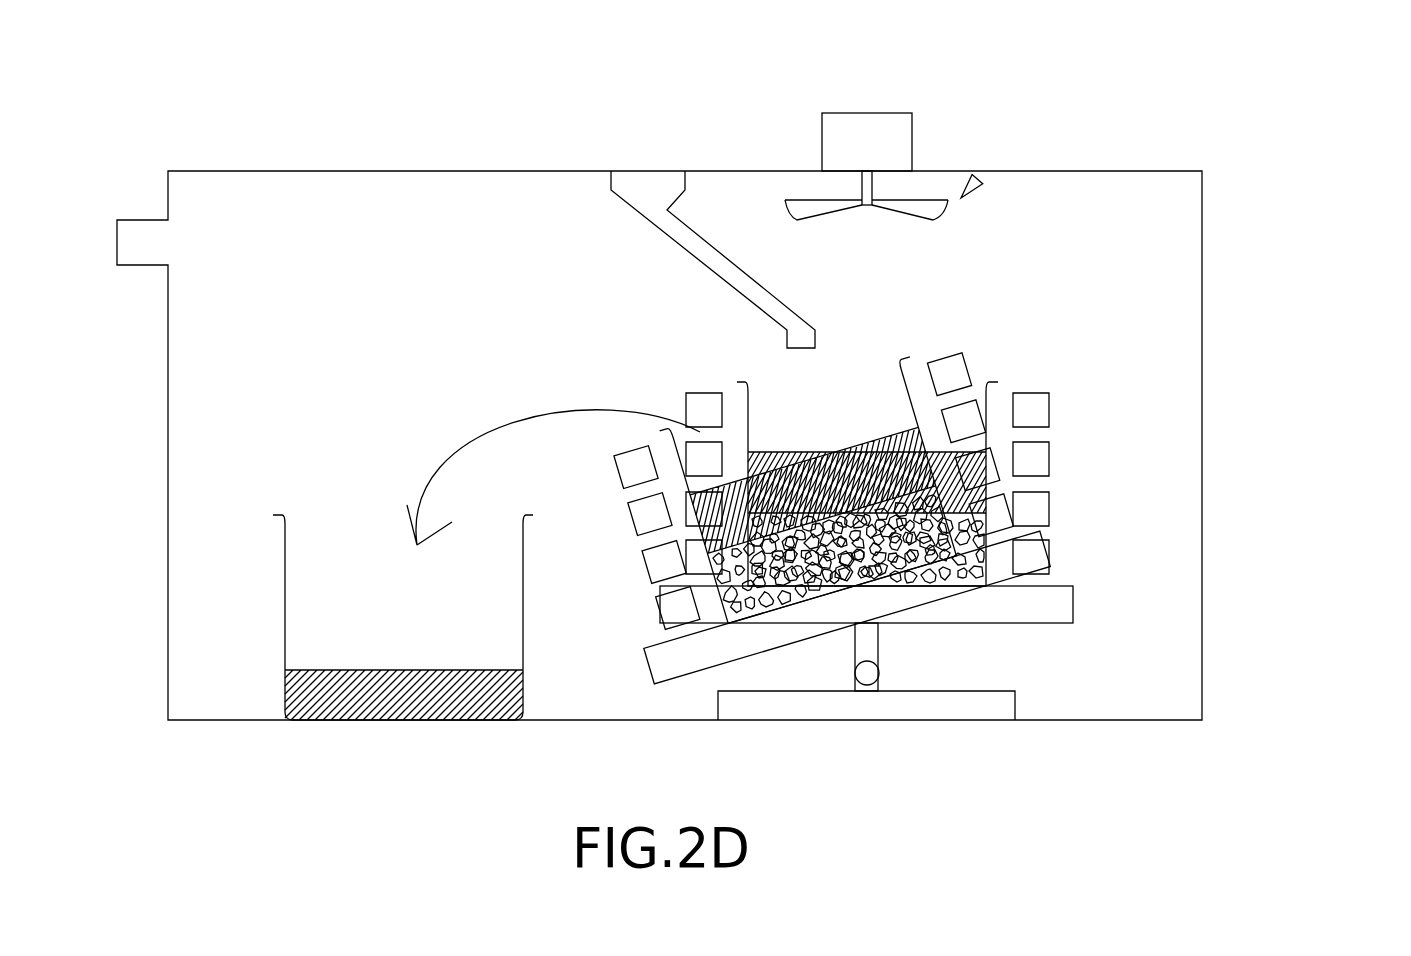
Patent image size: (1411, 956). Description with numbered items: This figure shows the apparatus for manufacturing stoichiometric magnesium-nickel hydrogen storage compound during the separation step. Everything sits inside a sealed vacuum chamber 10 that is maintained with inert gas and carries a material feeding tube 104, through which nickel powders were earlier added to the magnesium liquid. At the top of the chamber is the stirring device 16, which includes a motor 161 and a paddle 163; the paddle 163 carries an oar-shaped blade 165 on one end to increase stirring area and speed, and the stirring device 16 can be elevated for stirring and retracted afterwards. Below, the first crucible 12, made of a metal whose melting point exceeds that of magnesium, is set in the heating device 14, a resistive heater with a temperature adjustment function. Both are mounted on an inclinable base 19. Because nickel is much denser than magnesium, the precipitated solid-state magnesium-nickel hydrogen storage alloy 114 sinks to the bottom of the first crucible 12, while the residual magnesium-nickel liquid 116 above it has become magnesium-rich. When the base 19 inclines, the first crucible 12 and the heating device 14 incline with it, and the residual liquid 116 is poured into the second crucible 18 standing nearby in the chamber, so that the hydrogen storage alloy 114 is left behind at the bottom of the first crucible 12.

The vacuum chamber 10 is at (563, 171).
The material feeding tube 104 is at (611, 190).
The motor 161 is at (863, 205).
The stirring device 16 is at (977, 179).
The paddle 163 is at (873, 283).
The first crucible 12 is at (998, 380).
The heating device 14 is at (688, 412).
The residual magnesium-nickel liquid 116 is at (987, 484).
The solid-state magnesium-nickel hydrogen storage alloy 114 is at (988, 532).
The inclinable base 19 is at (1075, 602).
The oar-shaped blade 165 is at (975, 585).
The second crucible 18 is at (287, 650).